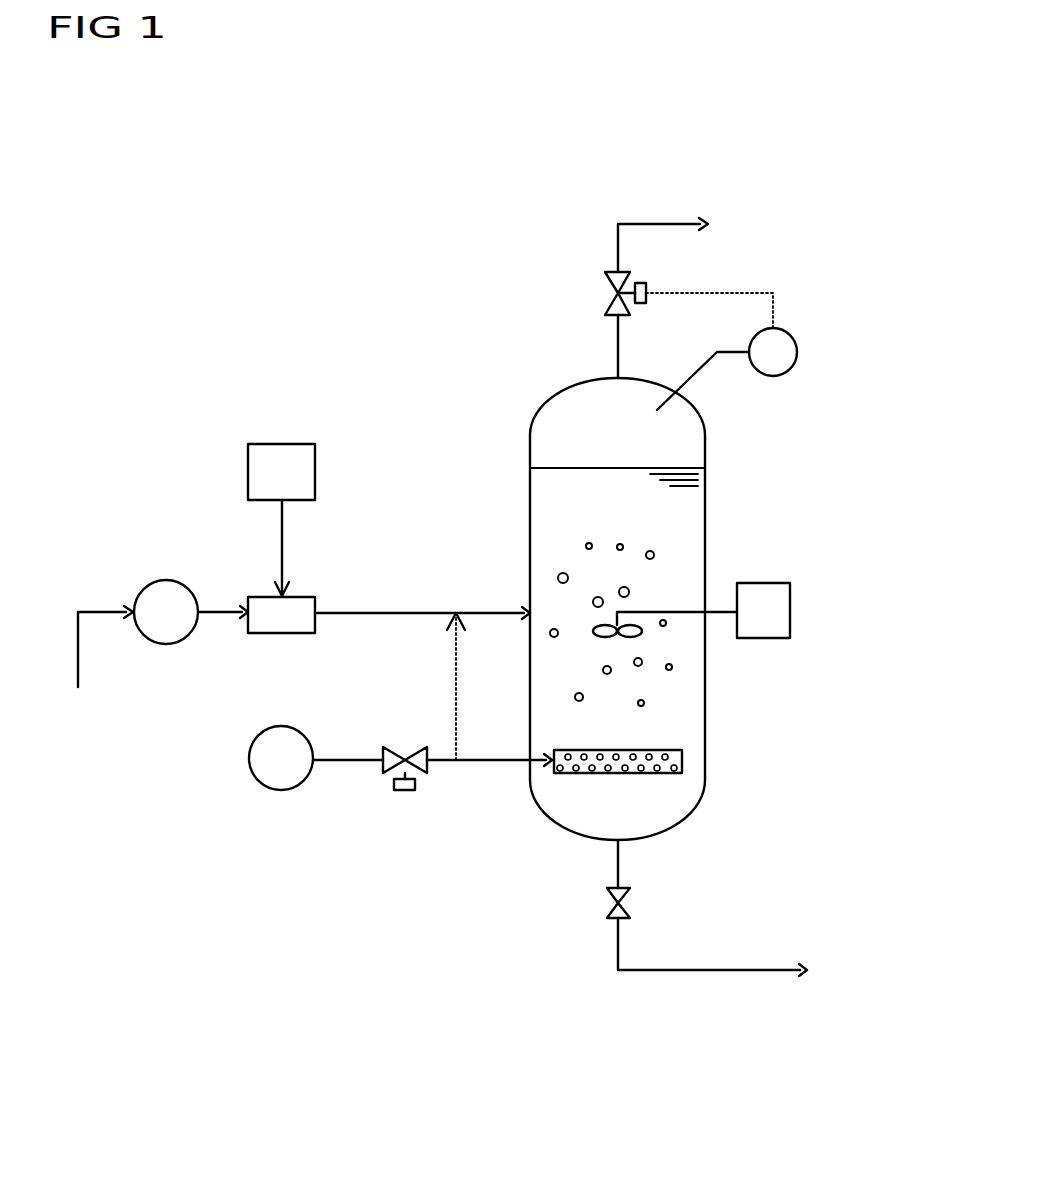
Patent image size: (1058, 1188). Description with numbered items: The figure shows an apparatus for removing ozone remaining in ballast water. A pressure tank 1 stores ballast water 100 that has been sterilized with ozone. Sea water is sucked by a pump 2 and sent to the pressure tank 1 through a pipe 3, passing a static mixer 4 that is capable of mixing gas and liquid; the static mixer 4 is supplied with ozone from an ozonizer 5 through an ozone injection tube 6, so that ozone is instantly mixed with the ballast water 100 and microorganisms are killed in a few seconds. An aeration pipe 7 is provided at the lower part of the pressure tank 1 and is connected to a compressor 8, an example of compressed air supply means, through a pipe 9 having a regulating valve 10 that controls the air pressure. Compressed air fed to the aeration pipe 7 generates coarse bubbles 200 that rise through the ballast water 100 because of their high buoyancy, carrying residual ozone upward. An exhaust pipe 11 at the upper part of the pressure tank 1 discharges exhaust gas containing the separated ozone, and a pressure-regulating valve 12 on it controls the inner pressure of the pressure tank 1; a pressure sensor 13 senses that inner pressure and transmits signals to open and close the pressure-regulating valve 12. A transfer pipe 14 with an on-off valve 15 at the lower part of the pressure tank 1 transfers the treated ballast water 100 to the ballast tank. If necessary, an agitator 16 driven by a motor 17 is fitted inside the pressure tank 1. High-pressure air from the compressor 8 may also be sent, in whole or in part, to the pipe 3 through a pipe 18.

The pressure tank 1 is at (705, 455).
The ballast water 100 is at (692, 507).
The coarse bubbles 200 is at (654, 554).
The pump 2 is at (167, 580).
The pipe 3 is at (410, 612).
The static mixer 4 is at (317, 593).
The ozonizer 5 is at (315, 470).
The ozone injection tube 6 is at (282, 527).
The aeration pipe 7 is at (682, 761).
The compressor 8 is at (281, 790).
The pipe 9 is at (478, 760).
The regulating valve 10 is at (404, 790).
The exhaust pipe 11 is at (618, 338).
The pressure-regulating valve 12 is at (605, 296).
The pressure sensor 13 is at (797, 352).
The transfer pipe 14 is at (617, 946).
The on-off valve 15 is at (630, 903).
The agitator 16 is at (643, 631).
The motor 17 is at (790, 611).
The pipe 18 is at (454, 679).